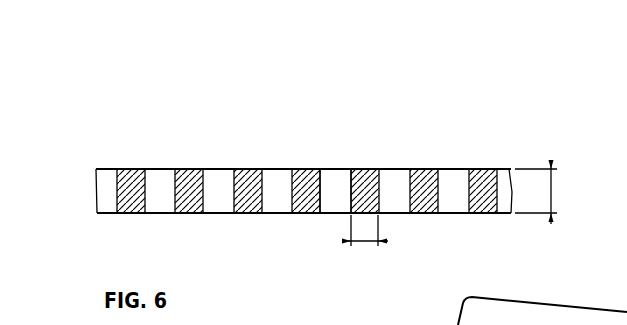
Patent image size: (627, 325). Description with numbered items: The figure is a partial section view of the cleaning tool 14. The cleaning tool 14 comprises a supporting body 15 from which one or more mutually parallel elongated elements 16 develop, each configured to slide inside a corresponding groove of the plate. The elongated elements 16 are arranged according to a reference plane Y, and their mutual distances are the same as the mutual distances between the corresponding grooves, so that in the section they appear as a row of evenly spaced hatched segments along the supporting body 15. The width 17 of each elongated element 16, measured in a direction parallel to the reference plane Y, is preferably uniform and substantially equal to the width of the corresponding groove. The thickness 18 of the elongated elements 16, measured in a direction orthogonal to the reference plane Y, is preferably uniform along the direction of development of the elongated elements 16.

The cleaning tool 14 is at (533, 108).
The supporting body 15 is at (338, 183).
The elongated elements 16 is at (422, 167).
The width 17 is at (365, 241).
The thickness 18 is at (553, 193).
The reference plane Y is at (210, 168).